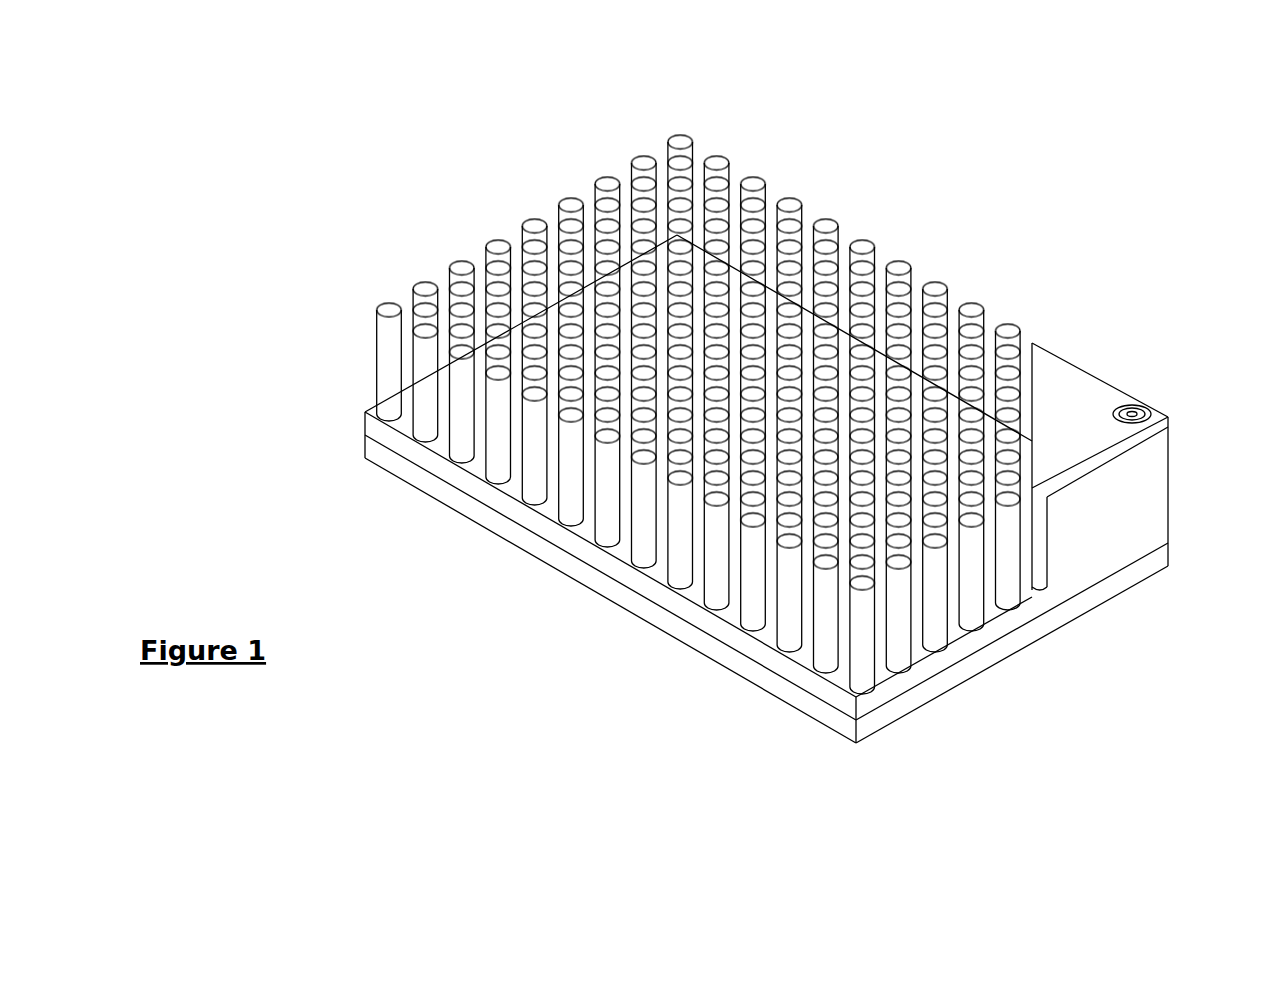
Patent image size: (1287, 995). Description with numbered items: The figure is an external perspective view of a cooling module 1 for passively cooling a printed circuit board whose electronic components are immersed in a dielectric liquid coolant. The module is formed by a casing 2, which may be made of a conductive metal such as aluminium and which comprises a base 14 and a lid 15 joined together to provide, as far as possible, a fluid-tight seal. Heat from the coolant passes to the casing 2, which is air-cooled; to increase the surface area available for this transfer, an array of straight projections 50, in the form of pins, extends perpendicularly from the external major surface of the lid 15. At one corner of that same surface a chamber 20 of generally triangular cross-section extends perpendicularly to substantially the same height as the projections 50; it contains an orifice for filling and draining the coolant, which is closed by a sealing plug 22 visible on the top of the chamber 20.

The cooling module 1 is at (1000, 122).
The casing 2 is at (610, 617).
The base 14 is at (855, 735).
The lid 15 is at (1028, 612).
The chamber 20 is at (1160, 523).
The sealing plug 22 is at (1140, 406).
The projections 50 is at (857, 243).